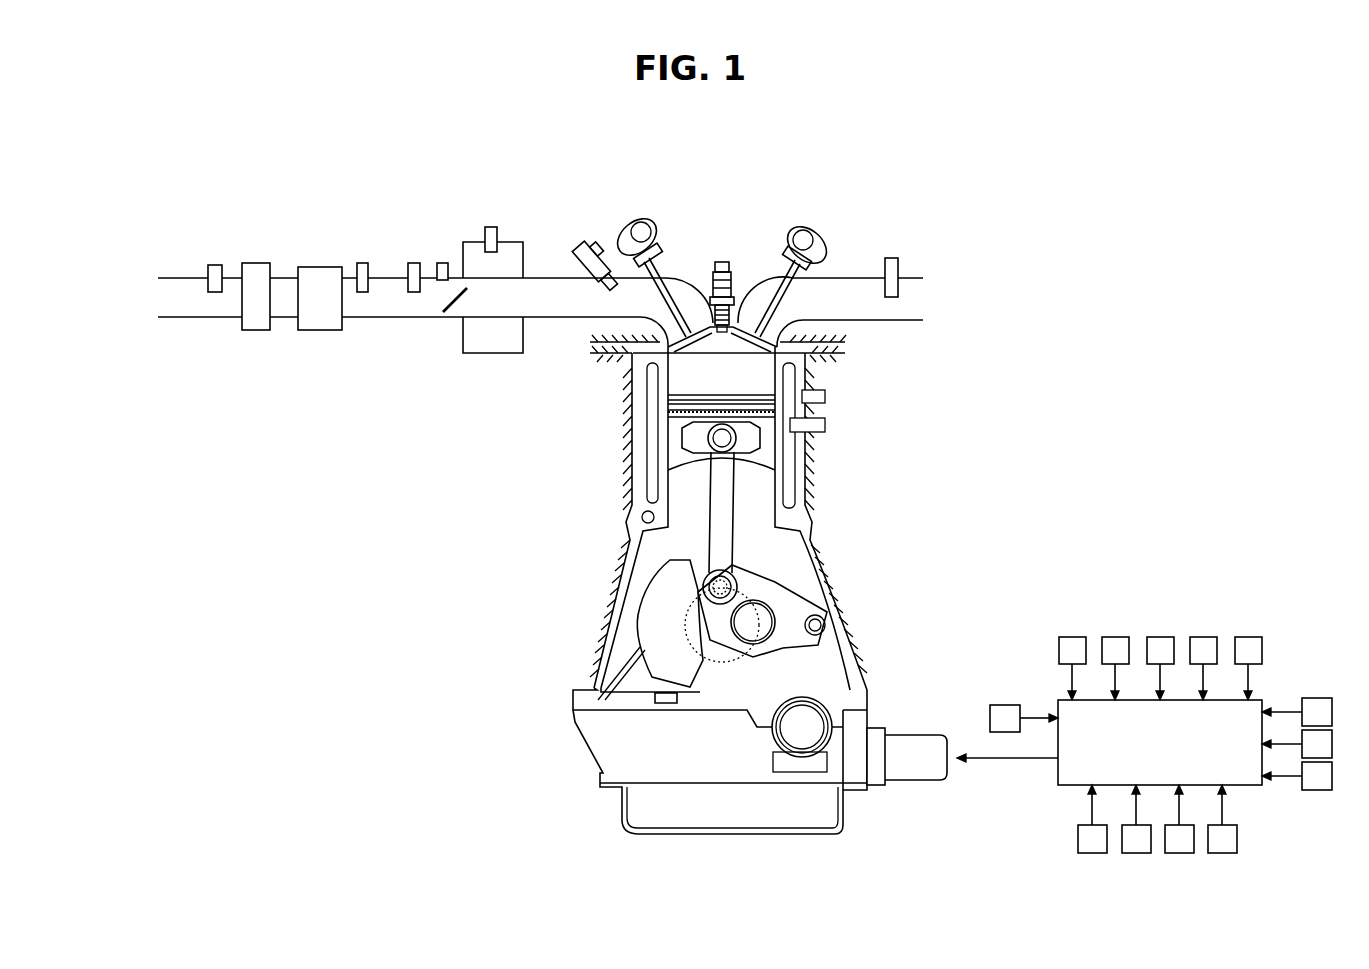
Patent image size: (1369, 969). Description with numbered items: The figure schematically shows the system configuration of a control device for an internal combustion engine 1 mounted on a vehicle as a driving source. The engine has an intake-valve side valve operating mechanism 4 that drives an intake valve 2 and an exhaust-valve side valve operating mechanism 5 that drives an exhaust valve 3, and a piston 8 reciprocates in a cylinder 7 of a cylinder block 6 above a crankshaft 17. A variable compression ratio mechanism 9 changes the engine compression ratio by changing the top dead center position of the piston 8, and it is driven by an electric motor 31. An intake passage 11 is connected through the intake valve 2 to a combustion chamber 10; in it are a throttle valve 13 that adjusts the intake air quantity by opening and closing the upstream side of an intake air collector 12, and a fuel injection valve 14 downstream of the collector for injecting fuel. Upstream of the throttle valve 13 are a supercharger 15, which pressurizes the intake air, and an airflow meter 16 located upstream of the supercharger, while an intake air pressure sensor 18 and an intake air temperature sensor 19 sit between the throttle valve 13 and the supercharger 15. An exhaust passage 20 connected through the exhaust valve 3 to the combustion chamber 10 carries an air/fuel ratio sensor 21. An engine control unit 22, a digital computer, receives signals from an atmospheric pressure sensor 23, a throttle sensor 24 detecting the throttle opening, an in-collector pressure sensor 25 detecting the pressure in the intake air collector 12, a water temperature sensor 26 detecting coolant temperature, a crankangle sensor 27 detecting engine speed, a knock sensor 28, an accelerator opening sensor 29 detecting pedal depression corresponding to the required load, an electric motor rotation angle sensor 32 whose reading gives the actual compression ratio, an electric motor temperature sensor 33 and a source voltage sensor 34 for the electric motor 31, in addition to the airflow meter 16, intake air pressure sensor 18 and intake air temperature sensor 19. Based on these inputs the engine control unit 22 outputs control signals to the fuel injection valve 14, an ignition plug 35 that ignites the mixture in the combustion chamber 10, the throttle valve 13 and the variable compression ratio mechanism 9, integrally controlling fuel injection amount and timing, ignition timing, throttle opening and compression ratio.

The internal combustion engine 1 is at (716, 516).
The intake valve 2 is at (661, 250).
The exhaust valve 3 is at (773, 300).
The intake-valve side valve operating mechanism 4 is at (660, 216).
The exhaust-valve side valve operating mechanism 5 is at (811, 213).
The cylinder block 6 is at (631, 500).
The cylinder 7 is at (674, 369).
The piston 8 is at (672, 438).
The variable compression ratio mechanism 9 is at (792, 578).
The combustion chamber 10 is at (763, 367).
The intake passage 11 is at (383, 318).
The intake air collector 12 is at (500, 354).
The throttle valve 13 is at (455, 312).
The fuel injection valve 14 is at (585, 248).
The supercharger 15 is at (320, 331).
The airflow meter 16 is at (256, 331).
The crankshaft 17 is at (660, 607).
The intake air pressure sensor 18 is at (362, 262).
The intake air temperature sensor 19 is at (414, 262).
The exhaust passage 20 is at (905, 304).
The air/fuel ratio sensor 21 is at (898, 279).
The engine control unit 22 is at (1144, 745).
The atmospheric pressure sensor 23 is at (215, 264).
The throttle sensor 24 is at (443, 262).
The in-collector pressure sensor 25 is at (491, 226).
The water temperature sensor 26 is at (826, 425).
The crankangle sensor 27 is at (1316, 745).
The knock sensor 28 is at (826, 397).
The accelerator opening sensor 29 is at (1222, 839).
The electric motor 31 is at (898, 776).
The electric motor rotation angle sensor 32 is at (1179, 839).
The electric motor temperature sensor 33 is at (1136, 839).
The source voltage sensor 34 is at (1092, 839).
The ignition plug 35 is at (716, 285).